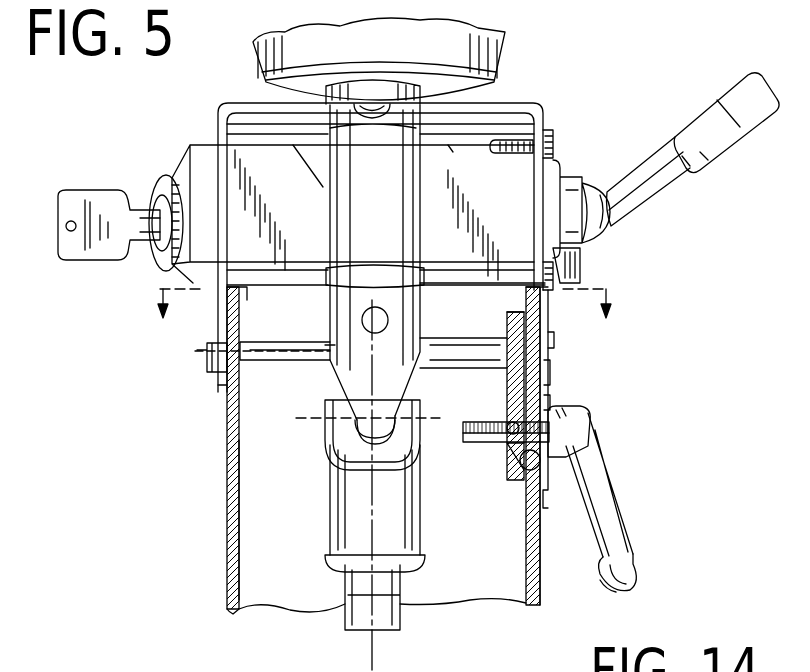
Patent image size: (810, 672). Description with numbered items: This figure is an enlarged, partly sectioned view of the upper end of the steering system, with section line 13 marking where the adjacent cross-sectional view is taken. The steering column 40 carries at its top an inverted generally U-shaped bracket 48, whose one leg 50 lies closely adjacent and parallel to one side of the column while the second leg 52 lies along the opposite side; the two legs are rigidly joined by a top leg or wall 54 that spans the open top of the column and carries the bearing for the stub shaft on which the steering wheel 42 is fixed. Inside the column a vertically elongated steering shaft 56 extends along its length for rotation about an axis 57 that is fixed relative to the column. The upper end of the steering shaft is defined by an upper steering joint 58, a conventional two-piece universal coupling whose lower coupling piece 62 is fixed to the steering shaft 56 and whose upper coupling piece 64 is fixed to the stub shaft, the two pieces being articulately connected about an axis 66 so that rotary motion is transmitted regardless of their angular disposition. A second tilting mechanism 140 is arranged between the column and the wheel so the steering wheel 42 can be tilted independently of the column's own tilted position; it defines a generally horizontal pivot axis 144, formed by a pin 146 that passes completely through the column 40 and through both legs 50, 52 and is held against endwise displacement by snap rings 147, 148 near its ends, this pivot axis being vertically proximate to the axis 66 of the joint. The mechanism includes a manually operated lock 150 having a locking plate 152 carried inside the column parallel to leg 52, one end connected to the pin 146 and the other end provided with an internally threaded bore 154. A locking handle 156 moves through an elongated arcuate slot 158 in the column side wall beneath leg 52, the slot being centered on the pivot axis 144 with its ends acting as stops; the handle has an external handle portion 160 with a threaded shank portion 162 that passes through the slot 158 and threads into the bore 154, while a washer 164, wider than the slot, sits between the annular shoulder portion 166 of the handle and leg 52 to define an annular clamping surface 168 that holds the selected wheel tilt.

The section line 13 is at (388, 299).
The steering column 40 is at (226, 594).
The steering wheel 42 is at (512, 54).
The bracket 48 is at (216, 126).
The leg 50 is at (222, 308).
The second leg 52 is at (548, 492).
The top leg or wall 54 is at (498, 106).
The steering shaft 56 is at (352, 590).
The axis 57 is at (374, 652).
The upper steering joint 58 is at (300, 520).
The lower coupling piece 62 is at (408, 538).
The upper coupling piece 64 is at (348, 372).
The axis 66 is at (298, 418).
The second tilting mechanism 140 is at (219, 400).
The pivot axis 144 is at (200, 356).
The pin 146 is at (274, 352).
The snap ring 147 is at (208, 348).
The snap ring 148 is at (550, 336).
The manually operated lock 150 is at (647, 520).
The locking plate 152 is at (506, 324).
The internally threaded bore 154 is at (509, 424).
The locking handle 156 is at (604, 582).
The elongated slot 158 is at (550, 370).
The external handle portion 160 is at (622, 558).
The threaded shank portion 162 is at (466, 442).
The washer 164 is at (550, 398).
The annular shoulder portion 166 is at (577, 408).
The annular clamping surface 168 is at (542, 468).